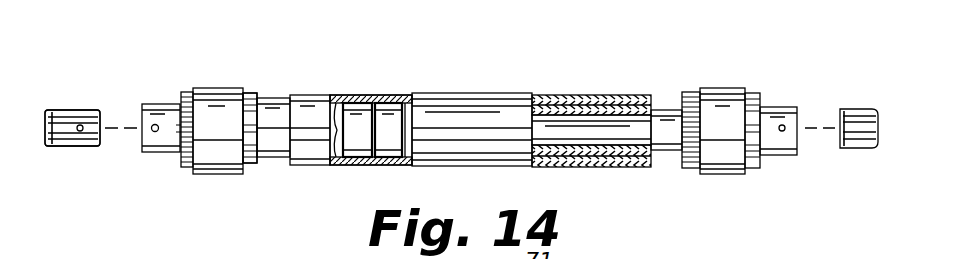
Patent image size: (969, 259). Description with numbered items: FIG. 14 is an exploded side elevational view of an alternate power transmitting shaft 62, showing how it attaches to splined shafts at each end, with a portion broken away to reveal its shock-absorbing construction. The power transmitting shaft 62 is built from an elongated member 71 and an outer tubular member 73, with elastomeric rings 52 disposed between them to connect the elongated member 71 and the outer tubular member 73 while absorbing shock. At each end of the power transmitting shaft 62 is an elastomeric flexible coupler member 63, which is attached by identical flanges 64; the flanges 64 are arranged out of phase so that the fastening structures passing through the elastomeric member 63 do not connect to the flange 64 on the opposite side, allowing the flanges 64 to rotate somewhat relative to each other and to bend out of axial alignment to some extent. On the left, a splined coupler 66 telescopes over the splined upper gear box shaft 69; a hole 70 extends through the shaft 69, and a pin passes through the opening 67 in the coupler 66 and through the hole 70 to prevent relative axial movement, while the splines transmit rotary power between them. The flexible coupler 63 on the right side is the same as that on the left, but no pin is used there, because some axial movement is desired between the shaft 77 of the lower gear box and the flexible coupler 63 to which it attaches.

The rings 52 is at (395, 96).
The power transmitting shaft 62 is at (570, 62).
The elastomeric flexible coupler member 63 is at (156, 104).
The flanges 64 is at (252, 95).
The splined coupler 66 is at (268, 258).
The opening 67 is at (157, 153).
The upper gear box shaft 69 is at (73, 110).
The hole 70 is at (80, 147).
The elongated member 71 is at (668, 110).
The outer tubular member 73 is at (352, 95).
The shaft of the lower gear box 77 is at (860, 110).